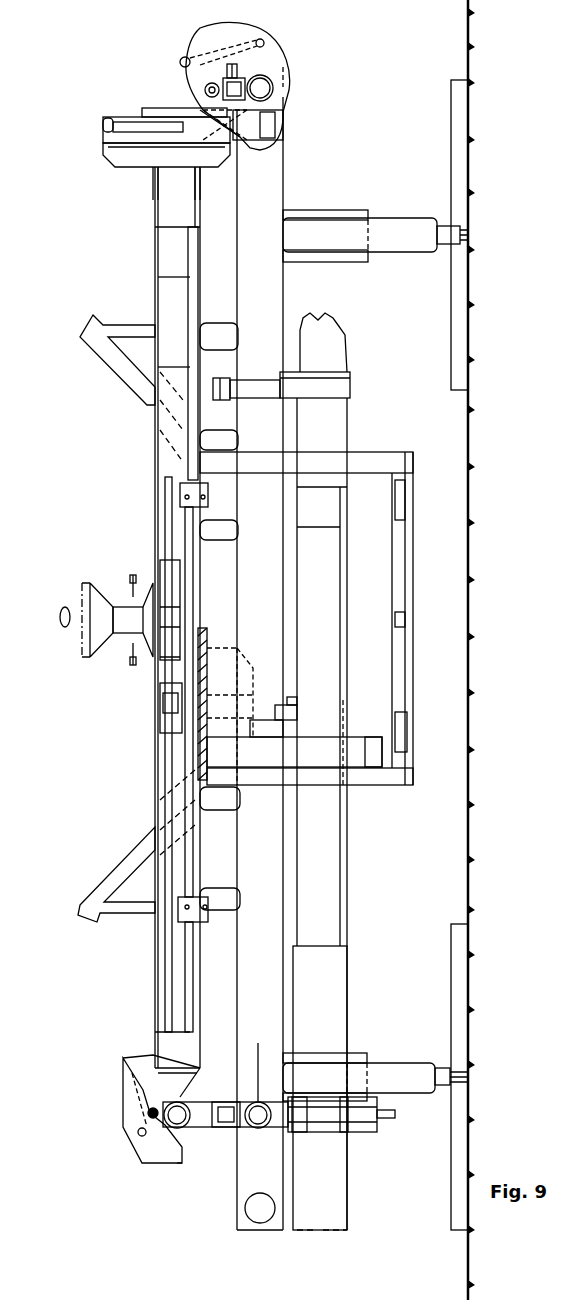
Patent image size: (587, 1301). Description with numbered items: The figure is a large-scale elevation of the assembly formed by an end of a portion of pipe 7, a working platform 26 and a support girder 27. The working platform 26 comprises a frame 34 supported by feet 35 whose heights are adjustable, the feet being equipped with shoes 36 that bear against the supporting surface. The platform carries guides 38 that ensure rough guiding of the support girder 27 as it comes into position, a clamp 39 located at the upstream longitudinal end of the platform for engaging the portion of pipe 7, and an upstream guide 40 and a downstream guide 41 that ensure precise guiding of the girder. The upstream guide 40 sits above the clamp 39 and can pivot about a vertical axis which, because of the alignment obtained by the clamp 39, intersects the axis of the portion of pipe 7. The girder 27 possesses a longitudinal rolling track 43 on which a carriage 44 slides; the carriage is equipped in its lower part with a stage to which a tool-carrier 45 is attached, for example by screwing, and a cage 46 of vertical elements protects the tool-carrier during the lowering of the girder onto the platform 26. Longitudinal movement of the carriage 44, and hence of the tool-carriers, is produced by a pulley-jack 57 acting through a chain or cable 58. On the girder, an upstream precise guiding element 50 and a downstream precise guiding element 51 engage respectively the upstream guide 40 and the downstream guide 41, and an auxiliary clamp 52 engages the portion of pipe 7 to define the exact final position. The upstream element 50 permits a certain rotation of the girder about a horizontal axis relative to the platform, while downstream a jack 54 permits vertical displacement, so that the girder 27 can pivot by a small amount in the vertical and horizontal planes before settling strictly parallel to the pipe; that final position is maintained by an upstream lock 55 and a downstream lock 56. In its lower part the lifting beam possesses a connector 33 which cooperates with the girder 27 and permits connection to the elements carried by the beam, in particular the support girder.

The portion of pipe 7 is at (330, 318).
The working platform 26 is at (270, 958).
The support girder 27 is at (163, 293).
The connector 33 is at (67, 622).
The frame 34 is at (292, 1030).
The feet 35 is at (458, 262).
The shoes 36 is at (470, 395).
The guides 38 is at (120, 360).
The clamp 39 is at (345, 1131).
The upstream guide 40 is at (188, 1138).
The downstream guide 41 is at (283, 103).
The longitudinal rolling track 43 is at (157, 550).
The carriage 44 is at (193, 677).
The tool-carrier 45 is at (266, 720).
The cage 46 is at (353, 782).
The upstream precise guiding element 50 is at (140, 1145).
The downstream precise guiding element 51 is at (250, 140).
The auxiliary clamp 52 is at (350, 385).
The jack 54 is at (92, 128).
The upstream lock 55 is at (177, 1165).
The downstream lock 56 is at (203, 35).
The pulley-jack 57 is at (155, 428).
The chain or cable 58 is at (162, 520).